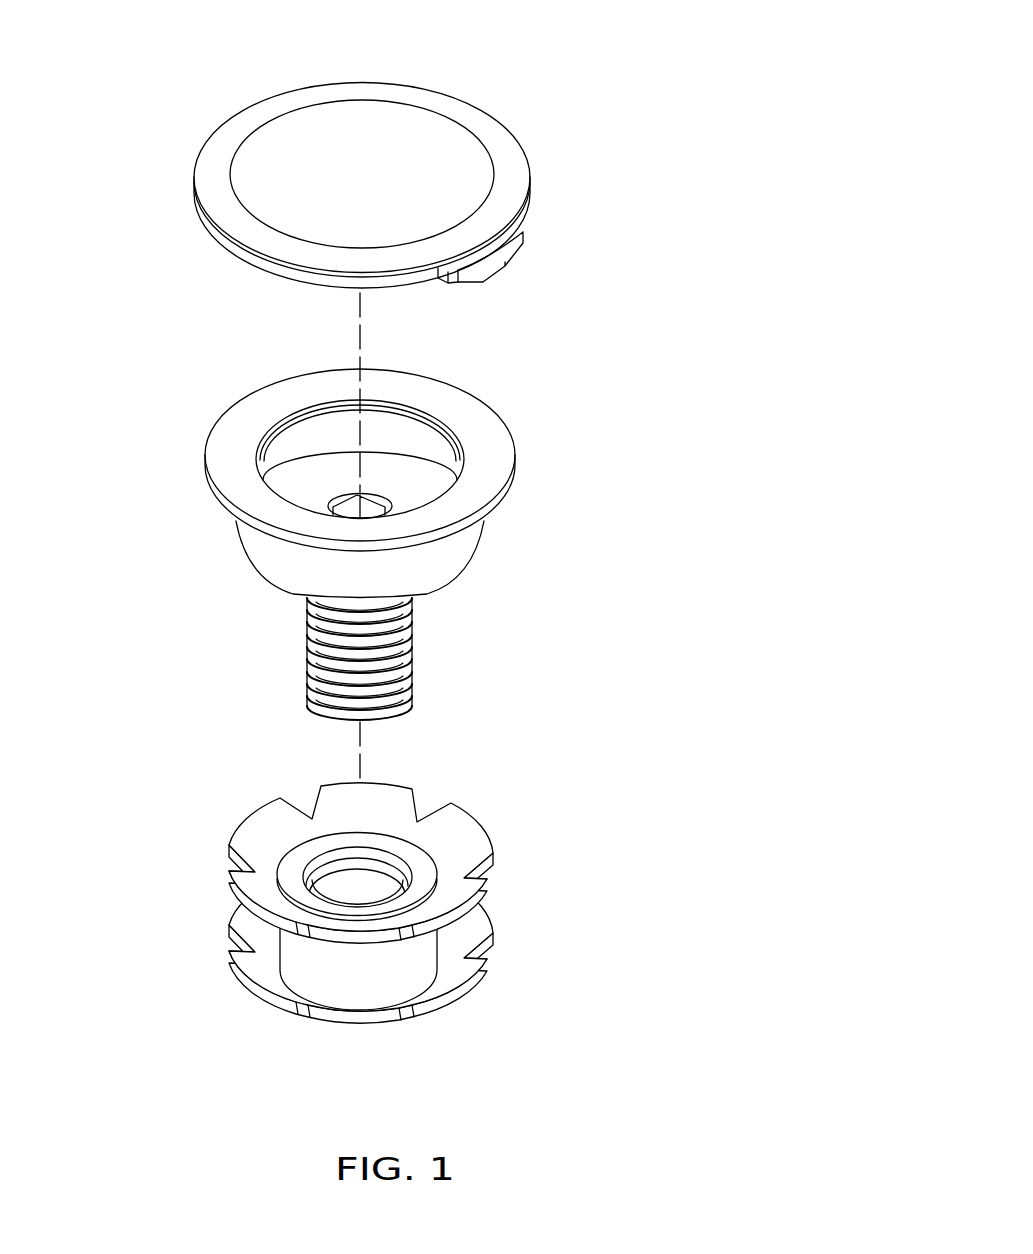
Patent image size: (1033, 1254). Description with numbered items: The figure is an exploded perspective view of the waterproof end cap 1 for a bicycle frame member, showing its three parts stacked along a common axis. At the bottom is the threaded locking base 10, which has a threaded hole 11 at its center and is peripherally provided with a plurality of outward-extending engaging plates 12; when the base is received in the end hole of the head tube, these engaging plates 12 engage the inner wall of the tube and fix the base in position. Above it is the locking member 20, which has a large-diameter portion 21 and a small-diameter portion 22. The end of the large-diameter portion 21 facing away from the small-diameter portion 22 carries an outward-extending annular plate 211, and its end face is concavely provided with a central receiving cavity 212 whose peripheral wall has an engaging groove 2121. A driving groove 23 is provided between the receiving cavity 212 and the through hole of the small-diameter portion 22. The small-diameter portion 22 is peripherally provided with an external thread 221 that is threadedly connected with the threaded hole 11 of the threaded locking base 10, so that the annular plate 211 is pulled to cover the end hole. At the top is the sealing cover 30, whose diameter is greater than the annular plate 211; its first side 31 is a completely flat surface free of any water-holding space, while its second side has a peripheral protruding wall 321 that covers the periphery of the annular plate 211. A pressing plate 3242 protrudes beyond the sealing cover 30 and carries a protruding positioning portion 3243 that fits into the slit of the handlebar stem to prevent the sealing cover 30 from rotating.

The end cap 1 is at (673, 112).
The threaded locking base 10 is at (474, 835).
The threaded hole 11 is at (380, 862).
The engaging plates 12 is at (478, 889).
The locking member 20 is at (499, 441).
The large-diameter portion 21 is at (430, 566).
The annular plate 211 is at (247, 419).
The receiving cavity 212 is at (432, 432).
The engaging groove 2121 is at (315, 412).
The small-diameter portion 22 is at (307, 630).
The external thread 221 is at (403, 630).
The driving groove 23 is at (350, 511).
The sealing cover 30 is at (503, 122).
The first side 31 is at (394, 142).
The wall 321 is at (243, 265).
The pressing plate 3242 is at (523, 233).
The protruding positioning portion 3243 is at (496, 280).